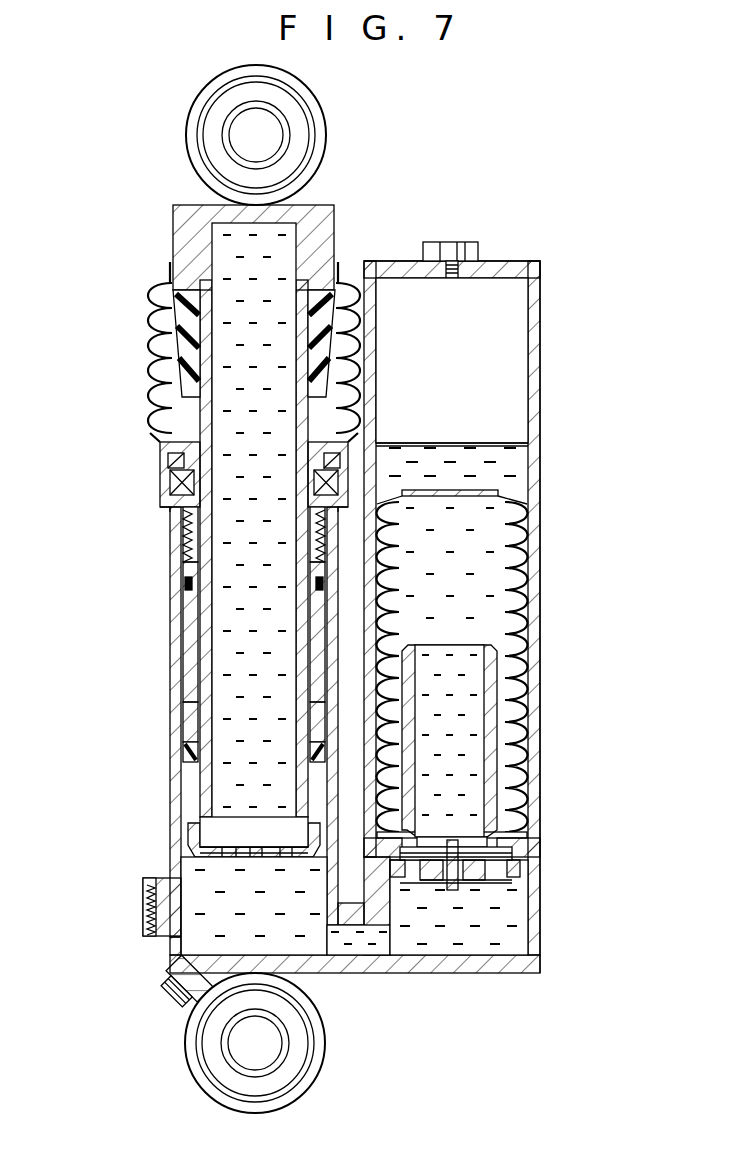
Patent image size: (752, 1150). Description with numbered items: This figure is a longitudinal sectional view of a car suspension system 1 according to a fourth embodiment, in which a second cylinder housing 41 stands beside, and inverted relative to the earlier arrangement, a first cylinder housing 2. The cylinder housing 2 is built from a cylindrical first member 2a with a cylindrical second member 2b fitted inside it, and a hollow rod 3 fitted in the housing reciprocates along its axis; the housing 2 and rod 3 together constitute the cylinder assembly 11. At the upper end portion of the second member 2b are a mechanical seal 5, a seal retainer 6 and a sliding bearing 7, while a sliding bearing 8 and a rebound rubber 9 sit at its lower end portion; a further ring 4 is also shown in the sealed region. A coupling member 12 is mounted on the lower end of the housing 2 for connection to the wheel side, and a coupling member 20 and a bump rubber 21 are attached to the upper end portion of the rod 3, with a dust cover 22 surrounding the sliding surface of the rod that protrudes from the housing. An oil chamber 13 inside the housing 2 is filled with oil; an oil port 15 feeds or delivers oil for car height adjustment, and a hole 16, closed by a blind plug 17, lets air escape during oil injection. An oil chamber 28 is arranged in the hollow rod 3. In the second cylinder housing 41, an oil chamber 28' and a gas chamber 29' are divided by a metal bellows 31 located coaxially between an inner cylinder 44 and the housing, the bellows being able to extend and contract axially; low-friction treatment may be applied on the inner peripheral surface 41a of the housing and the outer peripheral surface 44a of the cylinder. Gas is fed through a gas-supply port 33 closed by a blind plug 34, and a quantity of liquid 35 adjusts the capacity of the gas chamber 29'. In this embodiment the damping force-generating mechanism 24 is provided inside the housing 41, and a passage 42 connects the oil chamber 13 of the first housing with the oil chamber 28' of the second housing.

The car suspension system 1 is at (532, 142).
The cylinder housing 2 is at (212, 722).
The first member 2a is at (177, 643).
The second member 2b is at (192, 610).
The rod 3 is at (163, 440).
The seal ring 4 is at (188, 584).
The mechanical seal 5 is at (172, 482).
The seal retainer 6 is at (166, 460).
The sliding bearing 7 is at (185, 520).
The sliding bearing 8 is at (195, 720).
The rebound rubber 9 is at (195, 752).
The cylinder assembly 11 is at (150, 796).
The coupling member 12 is at (320, 1052).
The oil chamber 13 is at (195, 870).
The oil port 15 is at (145, 905).
The hole 16 is at (172, 960).
The blind plug 17 is at (175, 1000).
The coupling member 20 is at (190, 136).
The bump rubber 21 is at (160, 373).
The dust cover 22 is at (180, 292).
The damping force-generating mechanism 24 is at (505, 930).
The oil chamber 28 is at (226, 526).
The oil chamber 28' is at (504, 563).
The gas chamber 29' is at (490, 360).
The metal bellows 31 is at (525, 632).
The gas-supply port 33 is at (478, 270).
The blind plug 34 is at (450, 242).
The liquid 35 is at (510, 462).
The second cylinder housing 41 is at (486, 588).
The inner peripheral surface 41a is at (520, 490).
The passage 42 is at (375, 962).
The inner cylinder 44 is at (490, 740).
The outer peripheral surface 44a is at (520, 782).